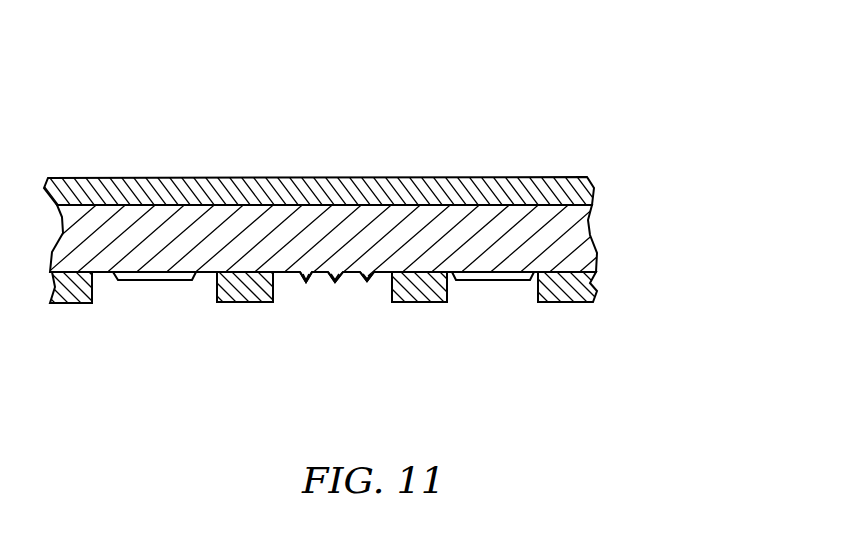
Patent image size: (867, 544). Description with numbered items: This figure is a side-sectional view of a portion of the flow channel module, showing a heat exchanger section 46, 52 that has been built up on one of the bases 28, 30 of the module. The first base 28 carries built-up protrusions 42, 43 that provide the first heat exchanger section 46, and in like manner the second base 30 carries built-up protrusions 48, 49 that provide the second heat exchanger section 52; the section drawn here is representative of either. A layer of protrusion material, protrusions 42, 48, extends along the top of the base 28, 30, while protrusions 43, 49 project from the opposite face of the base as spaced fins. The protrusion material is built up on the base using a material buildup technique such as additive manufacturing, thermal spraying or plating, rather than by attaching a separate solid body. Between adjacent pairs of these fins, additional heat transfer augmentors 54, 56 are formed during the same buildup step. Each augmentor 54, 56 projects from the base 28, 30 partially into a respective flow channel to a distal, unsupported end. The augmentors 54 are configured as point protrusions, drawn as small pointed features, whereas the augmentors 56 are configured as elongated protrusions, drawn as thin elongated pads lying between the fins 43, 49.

The first heat exchanger section 46 is at (367, 216).
The second heat exchanger section 52 is at (367, 216).
The protrusion 42 is at (323, 152).
The protrusion 48 is at (534, 177).
The first base 28 is at (367, 241).
The second base 30 is at (583, 233).
The protrusion 43 is at (325, 324).
The protrusion 49 is at (70, 303).
The heat transfer augmentor 56 is at (163, 280).
The heat transfer augmentor 54 is at (335, 282).